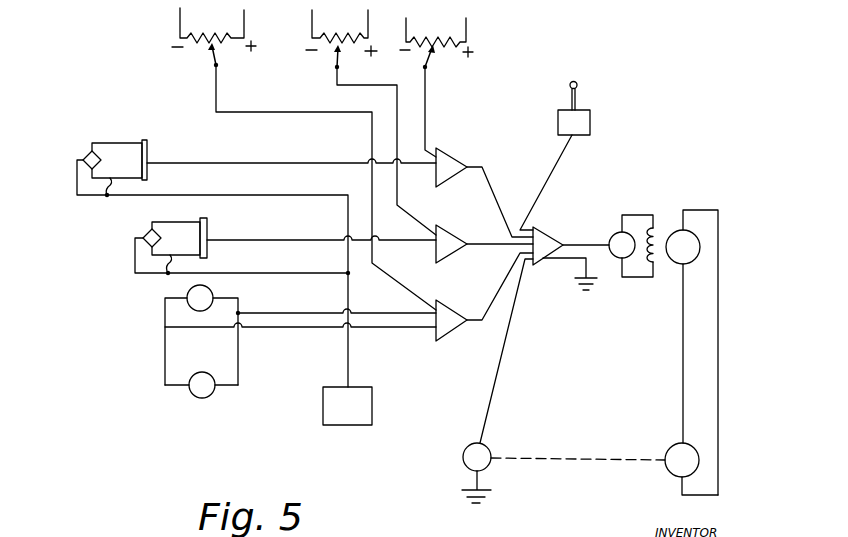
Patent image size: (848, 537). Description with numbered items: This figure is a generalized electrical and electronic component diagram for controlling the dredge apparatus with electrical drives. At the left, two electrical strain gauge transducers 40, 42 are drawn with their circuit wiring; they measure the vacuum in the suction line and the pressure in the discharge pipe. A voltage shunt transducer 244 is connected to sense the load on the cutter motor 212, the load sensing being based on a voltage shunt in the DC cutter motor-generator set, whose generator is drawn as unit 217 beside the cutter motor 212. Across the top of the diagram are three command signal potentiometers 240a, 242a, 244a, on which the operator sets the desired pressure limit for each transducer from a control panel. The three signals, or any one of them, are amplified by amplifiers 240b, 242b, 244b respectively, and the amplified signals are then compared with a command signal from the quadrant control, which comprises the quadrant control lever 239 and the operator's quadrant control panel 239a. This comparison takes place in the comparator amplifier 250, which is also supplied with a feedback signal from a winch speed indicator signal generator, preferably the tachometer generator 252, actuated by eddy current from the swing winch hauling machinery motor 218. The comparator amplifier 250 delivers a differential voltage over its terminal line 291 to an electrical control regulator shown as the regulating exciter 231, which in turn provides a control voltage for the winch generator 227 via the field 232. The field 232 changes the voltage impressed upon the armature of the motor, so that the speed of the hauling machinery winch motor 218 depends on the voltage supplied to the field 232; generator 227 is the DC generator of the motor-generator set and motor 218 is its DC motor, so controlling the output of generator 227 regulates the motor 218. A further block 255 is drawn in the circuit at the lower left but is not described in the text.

The strain gauge transducer 40 is at (78, 152).
The strain gauge transducer 42 is at (130, 228).
The command signal potentiometer 244a is at (210, 44).
The command signal potentiometer 242a is at (336, 50).
The command signal potentiometer 240a is at (437, 50).
The amplifier 240b is at (443, 153).
The amplifier 242b is at (447, 233).
The amplifier 244b is at (444, 304).
The comparator amplifier 250 is at (548, 262).
The quadrant control lever 239 is at (578, 82).
The operator's quadrant control panel 239a is at (588, 122).
The terminal line 291 is at (577, 238).
The regulating exciter 231 is at (620, 213).
The field 232 is at (664, 210).
The winch generator 227 is at (673, 262).
The hauling machinery winch motor 218 is at (667, 472).
The tachometer generator 252 is at (490, 447).
The cutter motor 212 is at (188, 294).
The generator 217 is at (212, 395).
The transducer 244 is at (314, 331).
The control unit 255 is at (365, 419).